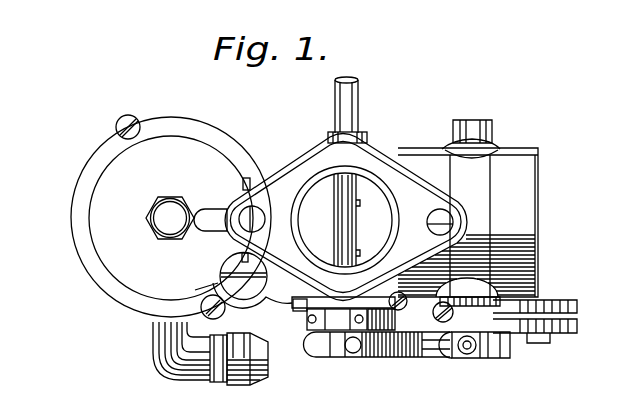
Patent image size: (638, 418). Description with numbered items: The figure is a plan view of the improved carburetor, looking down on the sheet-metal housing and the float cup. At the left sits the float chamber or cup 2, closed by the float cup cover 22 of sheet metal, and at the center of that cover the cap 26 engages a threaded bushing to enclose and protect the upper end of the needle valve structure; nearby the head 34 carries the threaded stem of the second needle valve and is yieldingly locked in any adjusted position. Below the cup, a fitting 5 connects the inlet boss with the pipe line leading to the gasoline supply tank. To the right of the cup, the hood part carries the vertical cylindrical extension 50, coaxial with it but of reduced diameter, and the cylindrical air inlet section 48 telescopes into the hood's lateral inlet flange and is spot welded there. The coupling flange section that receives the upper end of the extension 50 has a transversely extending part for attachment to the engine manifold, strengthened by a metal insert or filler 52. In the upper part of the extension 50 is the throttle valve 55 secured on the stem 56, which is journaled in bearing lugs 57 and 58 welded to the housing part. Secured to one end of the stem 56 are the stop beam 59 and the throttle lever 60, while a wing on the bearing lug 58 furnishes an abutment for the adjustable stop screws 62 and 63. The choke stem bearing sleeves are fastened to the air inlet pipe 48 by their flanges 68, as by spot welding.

The float chamber or cup 2 is at (96, 290).
The fitting 5 is at (155, 369).
The float cup cover 22 is at (120, 299).
The cap 26 is at (167, 240).
The head 34 is at (248, 284).
The air inlet section 48 is at (527, 188).
The vertical cylindrical extension 50 is at (397, 212).
The metal insert or filler 52 is at (380, 162).
The throttle valve 55 is at (350, 238).
The stem 56 is at (362, 101).
The bearing lug 57 is at (364, 135).
The bearing lug 58 is at (358, 297).
The stop beam 59 is at (340, 322).
The throttle lever 60 is at (385, 358).
The adjustable stop screw 62 is at (293, 309).
The adjustable stop screw 63 is at (399, 310).
The flanges 68 is at (467, 288).